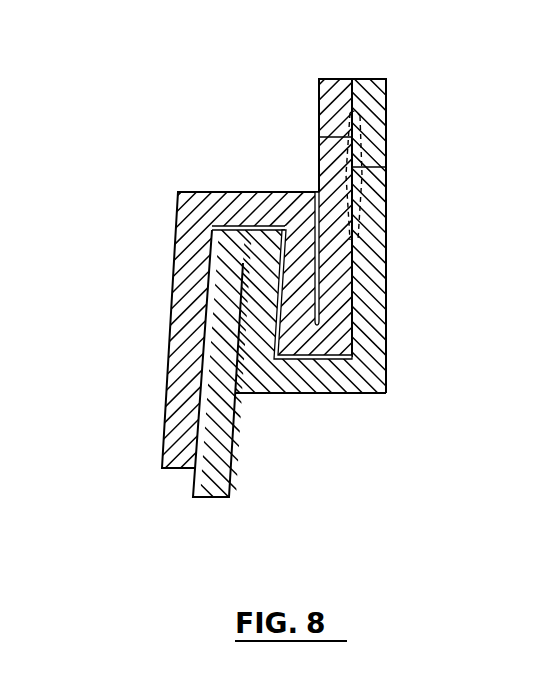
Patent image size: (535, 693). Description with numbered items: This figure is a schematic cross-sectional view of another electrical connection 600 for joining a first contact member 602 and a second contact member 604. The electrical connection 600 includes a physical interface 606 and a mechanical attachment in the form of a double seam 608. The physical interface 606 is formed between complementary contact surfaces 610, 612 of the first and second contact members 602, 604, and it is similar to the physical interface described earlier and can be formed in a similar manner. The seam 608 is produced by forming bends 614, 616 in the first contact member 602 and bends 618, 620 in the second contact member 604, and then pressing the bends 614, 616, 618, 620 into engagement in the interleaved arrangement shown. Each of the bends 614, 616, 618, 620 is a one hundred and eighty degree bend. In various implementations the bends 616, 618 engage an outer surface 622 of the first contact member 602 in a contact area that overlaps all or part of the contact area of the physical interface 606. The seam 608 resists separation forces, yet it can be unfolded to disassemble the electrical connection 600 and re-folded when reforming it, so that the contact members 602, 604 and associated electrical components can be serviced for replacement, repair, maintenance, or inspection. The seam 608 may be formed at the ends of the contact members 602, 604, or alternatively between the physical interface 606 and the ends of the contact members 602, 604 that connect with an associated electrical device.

The electrical connection 600 is at (120, 88).
The first contact member 602 is at (175, 440).
The second contact member 604 is at (217, 477).
The physical interface 606 is at (367, 133).
The double seam 608 is at (136, 290).
The contact surface 610 is at (383, 167).
The contact surface 612 is at (350, 137).
The bend 614 is at (317, 338).
The bend 616 is at (208, 203).
The bend 618 is at (315, 382).
The bend 620 is at (242, 247).
The outer surface 622 is at (320, 175).